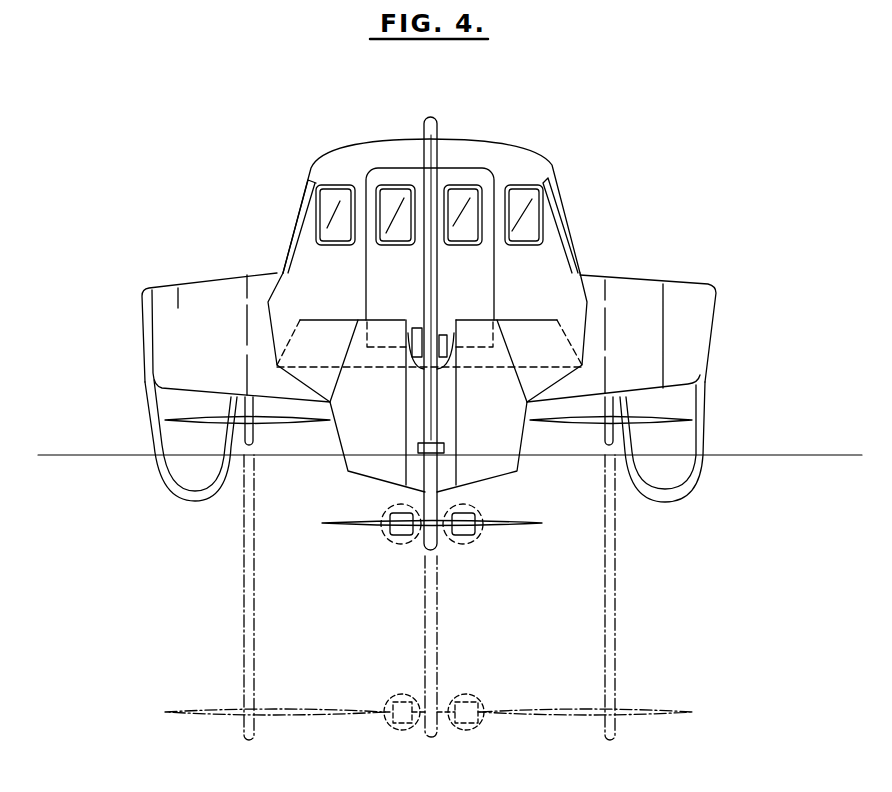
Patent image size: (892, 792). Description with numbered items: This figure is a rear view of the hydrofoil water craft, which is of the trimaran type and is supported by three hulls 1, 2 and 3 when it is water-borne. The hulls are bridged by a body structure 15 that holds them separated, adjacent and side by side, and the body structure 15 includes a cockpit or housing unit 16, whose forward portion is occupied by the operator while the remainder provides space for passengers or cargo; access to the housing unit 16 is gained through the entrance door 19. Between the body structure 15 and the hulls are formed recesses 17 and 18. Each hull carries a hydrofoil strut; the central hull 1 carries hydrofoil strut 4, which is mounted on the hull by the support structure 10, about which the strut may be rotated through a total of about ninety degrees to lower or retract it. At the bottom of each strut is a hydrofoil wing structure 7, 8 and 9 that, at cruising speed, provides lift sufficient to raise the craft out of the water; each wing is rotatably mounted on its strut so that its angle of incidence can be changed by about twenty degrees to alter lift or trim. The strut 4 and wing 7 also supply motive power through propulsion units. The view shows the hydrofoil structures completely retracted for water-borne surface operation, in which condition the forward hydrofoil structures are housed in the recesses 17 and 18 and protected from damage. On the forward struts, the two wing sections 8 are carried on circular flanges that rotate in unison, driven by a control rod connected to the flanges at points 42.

The hull 1 is at (487, 461).
The hull 2 is at (685, 448).
The hull 3 is at (161, 408).
The hydrofoil strut 4 is at (422, 133).
The hydrofoil wing structure 7 is at (396, 541).
The hydrofoil wing structure 8 is at (600, 428).
The hydrofoil wing structure 9 is at (260, 433).
The support structure 10 is at (407, 336).
The body structure 15 is at (207, 290).
The cockpit or housing unit 16 is at (497, 148).
The recess 17 is at (573, 434).
The recess 18 is at (315, 436).
The entrance door 19 is at (485, 296).
The connection points 42 is at (433, 350).